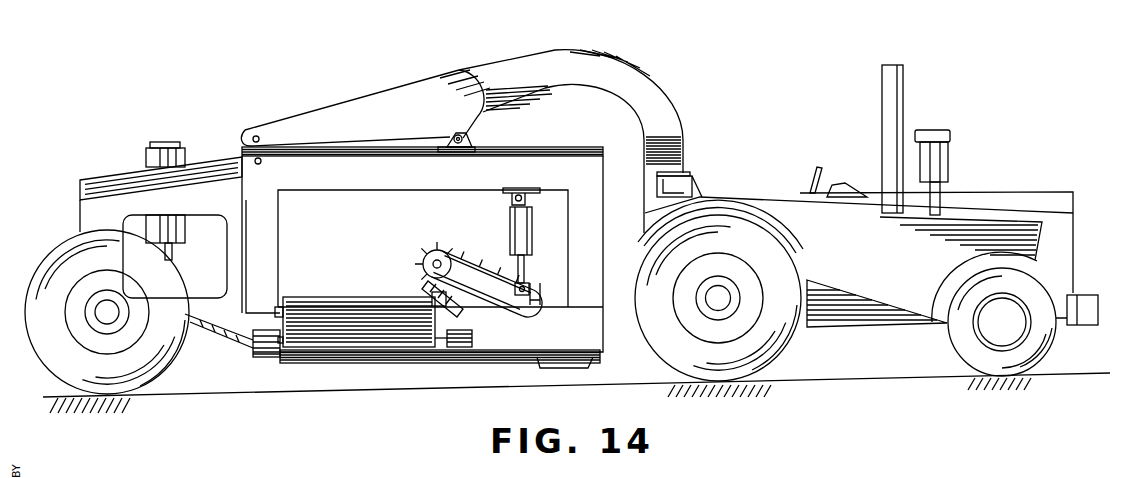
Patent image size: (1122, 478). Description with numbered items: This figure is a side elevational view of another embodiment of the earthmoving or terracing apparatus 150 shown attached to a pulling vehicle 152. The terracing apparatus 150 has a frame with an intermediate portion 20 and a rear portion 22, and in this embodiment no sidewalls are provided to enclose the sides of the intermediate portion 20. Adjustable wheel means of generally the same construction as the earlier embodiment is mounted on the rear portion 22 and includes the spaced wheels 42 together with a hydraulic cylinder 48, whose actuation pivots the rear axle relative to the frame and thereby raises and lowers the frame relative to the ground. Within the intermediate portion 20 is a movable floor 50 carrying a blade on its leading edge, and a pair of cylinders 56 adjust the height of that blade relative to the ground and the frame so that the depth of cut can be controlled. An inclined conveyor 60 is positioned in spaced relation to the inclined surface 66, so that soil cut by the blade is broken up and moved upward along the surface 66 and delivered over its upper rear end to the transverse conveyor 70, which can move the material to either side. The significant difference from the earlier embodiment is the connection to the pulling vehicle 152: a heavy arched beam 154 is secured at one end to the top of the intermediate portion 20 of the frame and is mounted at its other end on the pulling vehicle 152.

The intermediate portion 20 is at (502, 148).
The rear portion 22 is at (200, 163).
The wheels 42 is at (52, 256).
The hydraulic cylinder 48 is at (163, 142).
The floor 50 is at (450, 363).
The hydraulic cylinders 56 is at (512, 225).
The inclined elevator conveyor 60 is at (508, 268).
The inclined floating flat surface 66 is at (438, 305).
The transverse horizontally disposed conveyor 70 is at (376, 297).
The terracing apparatus 150 is at (427, 70).
The pulling vehicle 152 is at (748, 197).
The arched beam 154 is at (613, 53).